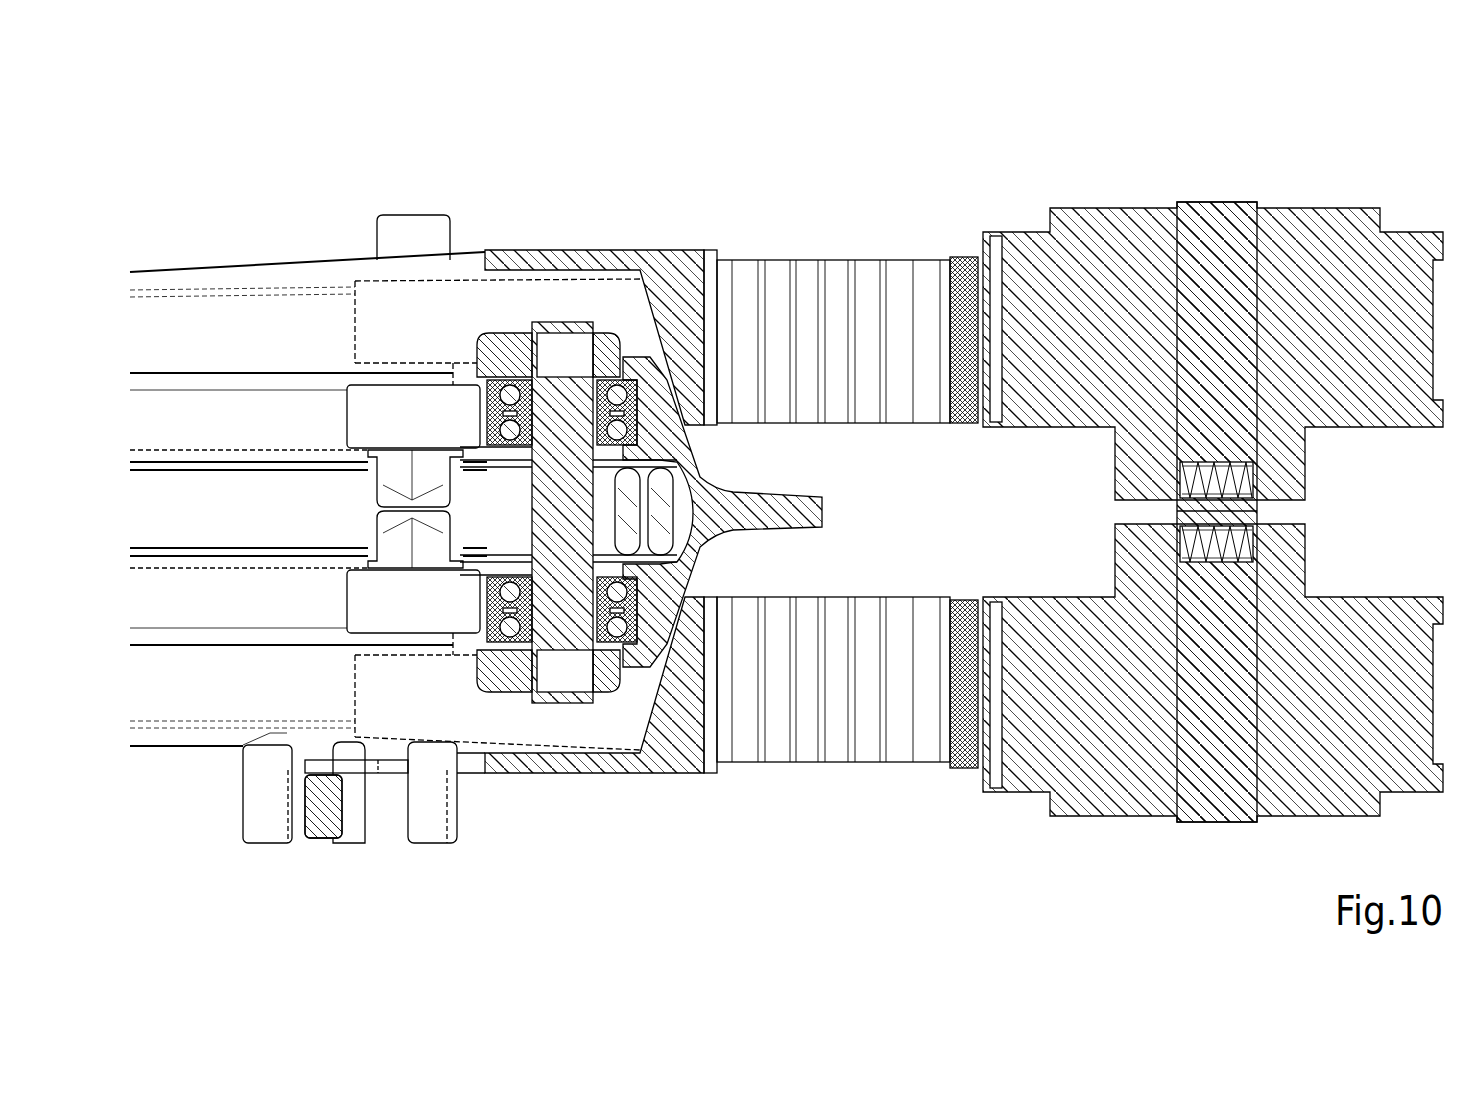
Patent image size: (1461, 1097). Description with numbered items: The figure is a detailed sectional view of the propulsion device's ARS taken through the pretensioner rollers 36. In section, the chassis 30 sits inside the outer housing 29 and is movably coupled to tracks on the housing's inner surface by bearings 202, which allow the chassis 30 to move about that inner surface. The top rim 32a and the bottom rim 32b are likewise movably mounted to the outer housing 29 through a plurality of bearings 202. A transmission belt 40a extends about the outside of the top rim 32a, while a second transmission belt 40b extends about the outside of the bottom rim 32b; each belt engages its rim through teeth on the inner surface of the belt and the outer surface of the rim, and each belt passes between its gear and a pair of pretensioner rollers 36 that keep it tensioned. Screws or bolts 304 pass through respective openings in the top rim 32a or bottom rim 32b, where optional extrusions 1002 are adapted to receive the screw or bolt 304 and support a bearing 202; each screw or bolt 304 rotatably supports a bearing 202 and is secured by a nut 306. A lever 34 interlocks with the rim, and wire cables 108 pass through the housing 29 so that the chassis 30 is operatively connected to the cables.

The screw or bolt 304 is at (390, 767).
The bearing 202 is at (575, 325).
The chassis 30 is at (505, 335).
The top rim 32a is at (690, 248).
The bottom rim 32b is at (683, 790).
The outer housing 29 is at (705, 302).
The transmission belt 40a is at (863, 300).
The second transmission belt 40b is at (863, 727).
The pretensioner roller 36 is at (1323, 317).
The extrusion 1002 is at (403, 700).
The wire cable 108 is at (823, 520).
The nut 306 is at (390, 545).
The lever 34 is at (353, 797).